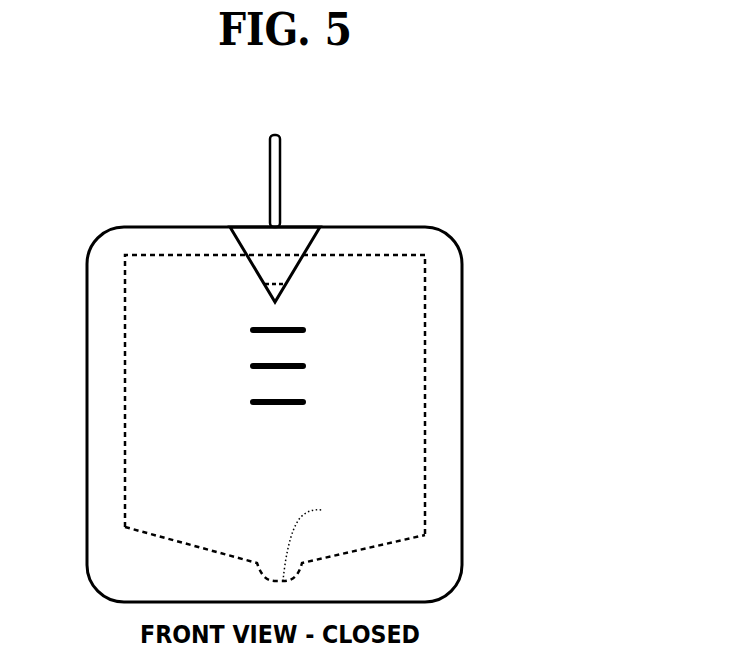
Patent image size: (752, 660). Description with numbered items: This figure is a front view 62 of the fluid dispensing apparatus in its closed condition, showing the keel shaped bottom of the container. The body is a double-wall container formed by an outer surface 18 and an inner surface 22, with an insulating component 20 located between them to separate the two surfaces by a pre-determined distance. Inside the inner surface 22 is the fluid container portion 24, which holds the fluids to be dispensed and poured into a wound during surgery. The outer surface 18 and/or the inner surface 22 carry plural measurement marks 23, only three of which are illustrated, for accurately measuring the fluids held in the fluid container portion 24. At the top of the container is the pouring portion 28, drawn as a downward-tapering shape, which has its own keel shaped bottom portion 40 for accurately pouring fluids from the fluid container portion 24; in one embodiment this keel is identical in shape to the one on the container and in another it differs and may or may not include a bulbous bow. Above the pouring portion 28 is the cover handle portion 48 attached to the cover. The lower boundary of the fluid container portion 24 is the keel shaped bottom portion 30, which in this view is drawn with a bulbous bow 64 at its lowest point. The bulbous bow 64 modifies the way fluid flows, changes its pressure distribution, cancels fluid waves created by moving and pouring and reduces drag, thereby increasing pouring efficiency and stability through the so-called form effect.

The outer surface 18 is at (87, 377).
The insulating component 20 is at (414, 577).
The inner surface 22 is at (126, 377).
The measurement marks 23 is at (293, 364).
The fluid container portion 24 is at (374, 441).
The pouring portion 28 is at (273, 252).
The keel shaped bottom portion 30 is at (163, 535).
The keel shaped bottom portion of the pouring portion 40 is at (285, 285).
The cover handle portion 48 is at (281, 181).
The front view 62 is at (540, 132).
The bulbous bow 64 is at (320, 536).